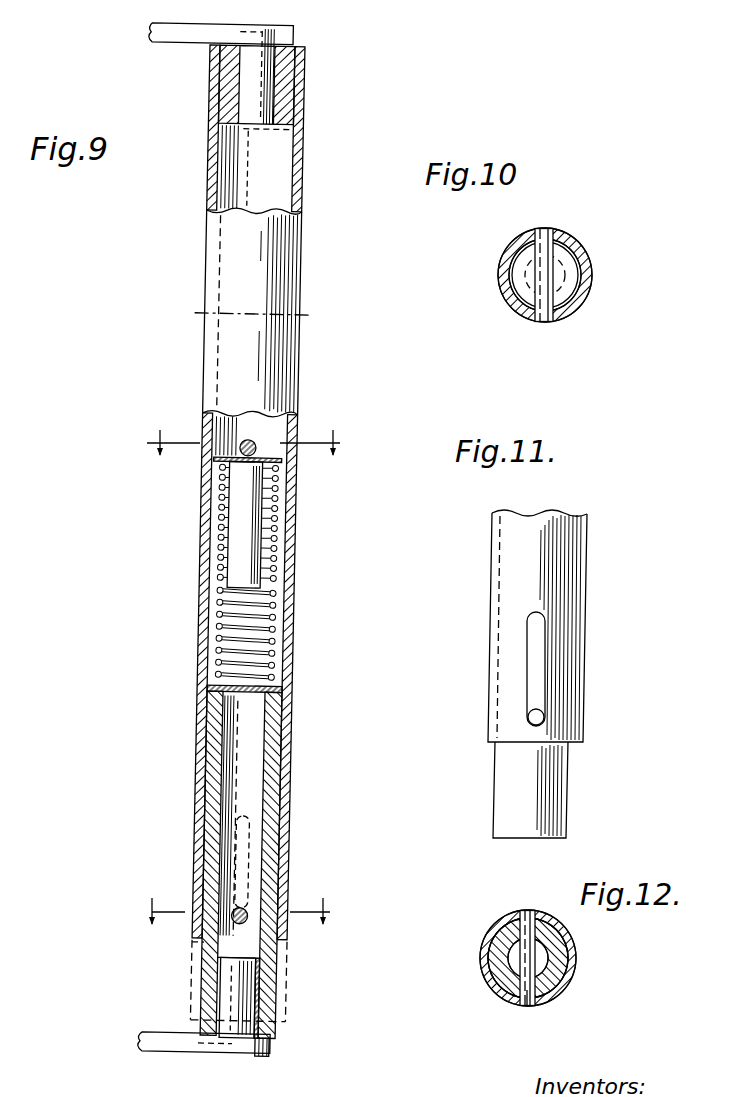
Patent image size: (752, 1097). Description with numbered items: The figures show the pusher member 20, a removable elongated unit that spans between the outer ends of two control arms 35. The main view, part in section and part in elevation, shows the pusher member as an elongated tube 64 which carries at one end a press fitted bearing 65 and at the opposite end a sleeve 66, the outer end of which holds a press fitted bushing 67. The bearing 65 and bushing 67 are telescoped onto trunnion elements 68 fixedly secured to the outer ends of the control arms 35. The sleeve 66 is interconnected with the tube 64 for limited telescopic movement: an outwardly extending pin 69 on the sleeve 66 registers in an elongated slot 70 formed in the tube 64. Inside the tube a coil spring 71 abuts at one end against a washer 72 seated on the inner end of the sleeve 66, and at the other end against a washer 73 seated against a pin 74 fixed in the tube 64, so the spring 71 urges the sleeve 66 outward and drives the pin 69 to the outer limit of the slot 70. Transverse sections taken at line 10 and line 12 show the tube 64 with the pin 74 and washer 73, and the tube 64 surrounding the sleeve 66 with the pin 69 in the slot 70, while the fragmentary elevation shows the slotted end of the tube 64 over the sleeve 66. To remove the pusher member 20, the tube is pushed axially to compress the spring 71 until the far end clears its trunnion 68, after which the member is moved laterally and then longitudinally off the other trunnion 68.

In FIG. 9, the pusher member 20 is at (300, 587).
In FIG. 10, the pusher member 20 is at (592, 256).
In FIG. 11, the pusher member 20 is at (590, 590).
In FIG. 12, the pusher member 20 is at (577, 970).
In FIG. 9, the control arm 35 is at (163, 44).
In FIG. 9, the elongated tube 64 is at (292, 541).
In FIG. 10, the elongated tube 64 is at (592, 276).
In FIG. 11, the elongated tube 64 is at (560, 530).
In FIG. 12, the elongated tube 64 is at (495, 930).
In FIG. 9, the press fitted bearing 65 is at (290, 108).
In FIG. 9, the sleeve 66 is at (258, 762).
In FIG. 11, the sleeve 66 is at (510, 772).
In FIG. 12, the sleeve 66 is at (567, 955).
In FIG. 9, the press fitted bushing 67 is at (263, 992).
In FIG. 9, the trunnion element 68 is at (265, 80).
In FIG. 9, the pin 69 is at (247, 910).
In FIG. 11, the pin 69 is at (545, 717).
In FIG. 12, the pin 69 is at (523, 1003).
In FIG. 9, the elongated slot 70 is at (283, 848).
In FIG. 11, the elongated slot 70 is at (545, 662).
In FIG. 12, the elongated slot 70 is at (512, 915).
In FIG. 9, the coil spring 71 is at (270, 625).
In FIG. 9, the washer 72 is at (285, 688).
In FIG. 9, the washer 73 is at (268, 452).
In FIG. 10, the washer 73 is at (521, 283).
In FIG. 9, the pin 74 is at (212, 438).
In FIG. 10, the pin 74 is at (530, 306).
In FIG. 9, the section line 10— 10 is at (241, 446).
In FIG. 9, the section line 12— 12 is at (240, 916).